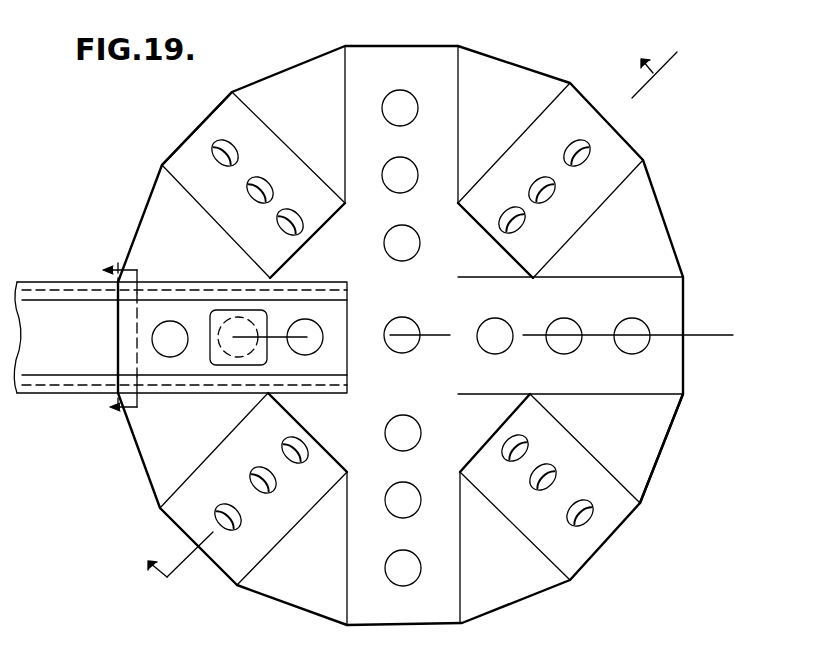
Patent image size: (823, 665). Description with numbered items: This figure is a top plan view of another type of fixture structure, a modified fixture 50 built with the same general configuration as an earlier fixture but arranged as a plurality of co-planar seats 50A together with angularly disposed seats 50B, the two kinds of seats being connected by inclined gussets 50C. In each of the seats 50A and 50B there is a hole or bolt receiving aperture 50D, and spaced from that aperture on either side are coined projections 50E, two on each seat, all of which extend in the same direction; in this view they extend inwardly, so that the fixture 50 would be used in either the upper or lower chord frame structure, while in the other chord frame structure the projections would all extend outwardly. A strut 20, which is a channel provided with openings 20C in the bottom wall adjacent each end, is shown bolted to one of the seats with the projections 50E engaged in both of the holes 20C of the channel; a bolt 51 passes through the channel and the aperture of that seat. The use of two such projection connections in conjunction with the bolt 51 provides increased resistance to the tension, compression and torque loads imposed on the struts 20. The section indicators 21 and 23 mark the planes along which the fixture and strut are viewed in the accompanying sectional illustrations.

The strut 20 is at (113, 339).
The openings 20C is at (170, 326).
The section line 21- 21 is at (414, 328).
The section line 23- 23 is at (134, 339).
The modified fixture 50 is at (678, 442).
The co-planar seats 50A is at (440, 62).
The angularly disposed seats 50B is at (183, 168).
The inclined gussets 50C is at (642, 468).
The bolt receiving aperture 50D is at (416, 170).
The coined projections 50E is at (418, 106).
The bolt 51 is at (227, 312).